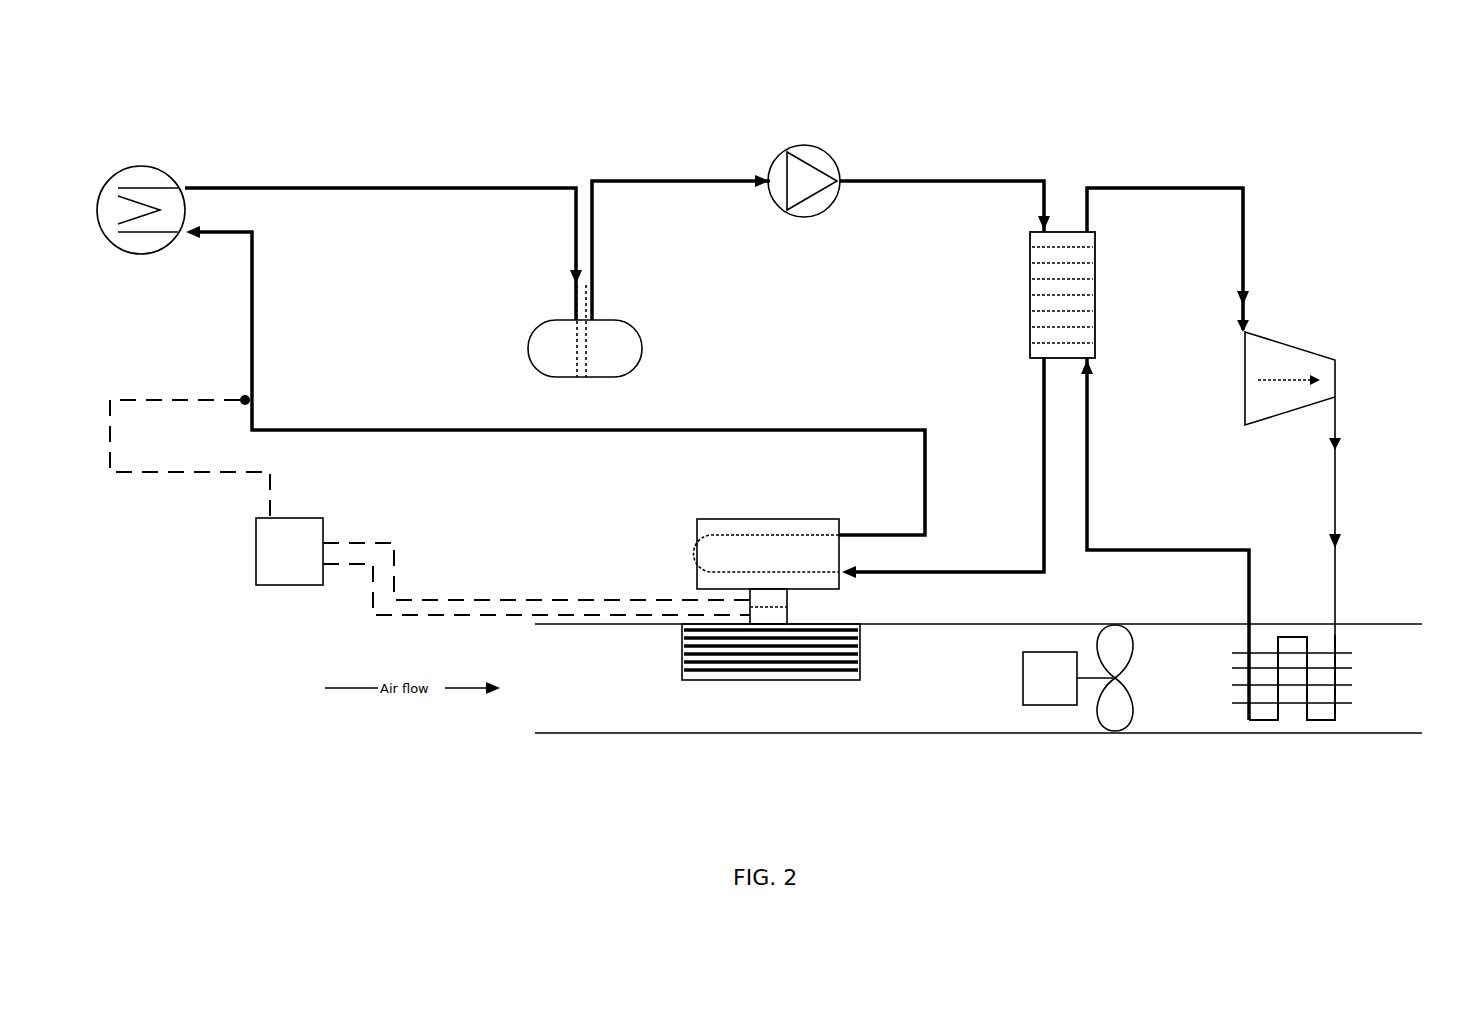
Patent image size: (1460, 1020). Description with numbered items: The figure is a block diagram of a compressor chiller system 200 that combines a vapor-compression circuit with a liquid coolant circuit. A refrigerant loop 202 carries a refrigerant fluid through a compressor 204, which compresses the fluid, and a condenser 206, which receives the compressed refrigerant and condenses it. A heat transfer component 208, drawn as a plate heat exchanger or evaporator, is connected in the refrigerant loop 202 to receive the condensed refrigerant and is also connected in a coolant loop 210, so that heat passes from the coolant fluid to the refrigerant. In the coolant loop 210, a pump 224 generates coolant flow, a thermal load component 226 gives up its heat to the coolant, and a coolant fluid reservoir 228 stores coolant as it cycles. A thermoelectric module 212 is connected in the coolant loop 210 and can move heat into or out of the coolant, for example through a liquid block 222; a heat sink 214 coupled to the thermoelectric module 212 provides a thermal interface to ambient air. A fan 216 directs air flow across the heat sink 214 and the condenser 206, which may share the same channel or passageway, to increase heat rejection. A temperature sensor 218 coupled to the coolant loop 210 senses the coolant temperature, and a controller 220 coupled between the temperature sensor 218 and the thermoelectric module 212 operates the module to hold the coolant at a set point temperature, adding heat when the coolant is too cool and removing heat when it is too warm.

The compressor chiller system 200 is at (416, 86).
The refrigerant loop 202 is at (1237, 188).
The compressor 204 is at (1283, 360).
The condenser 206 is at (1296, 710).
The heat transfer component 208 is at (1035, 295).
The coolant loop 210 is at (450, 188).
The thermoelectric module 212 is at (768, 598).
The heat sink 214 is at (683, 650).
The fan 216 is at (1021, 698).
The temperature sensor 218 is at (250, 395).
The controller 220 is at (255, 543).
The liquid block 222 is at (712, 522).
The pump 224 is at (778, 155).
The thermal load component 226 is at (150, 180).
The coolant fluid reservoir 228 is at (535, 335).